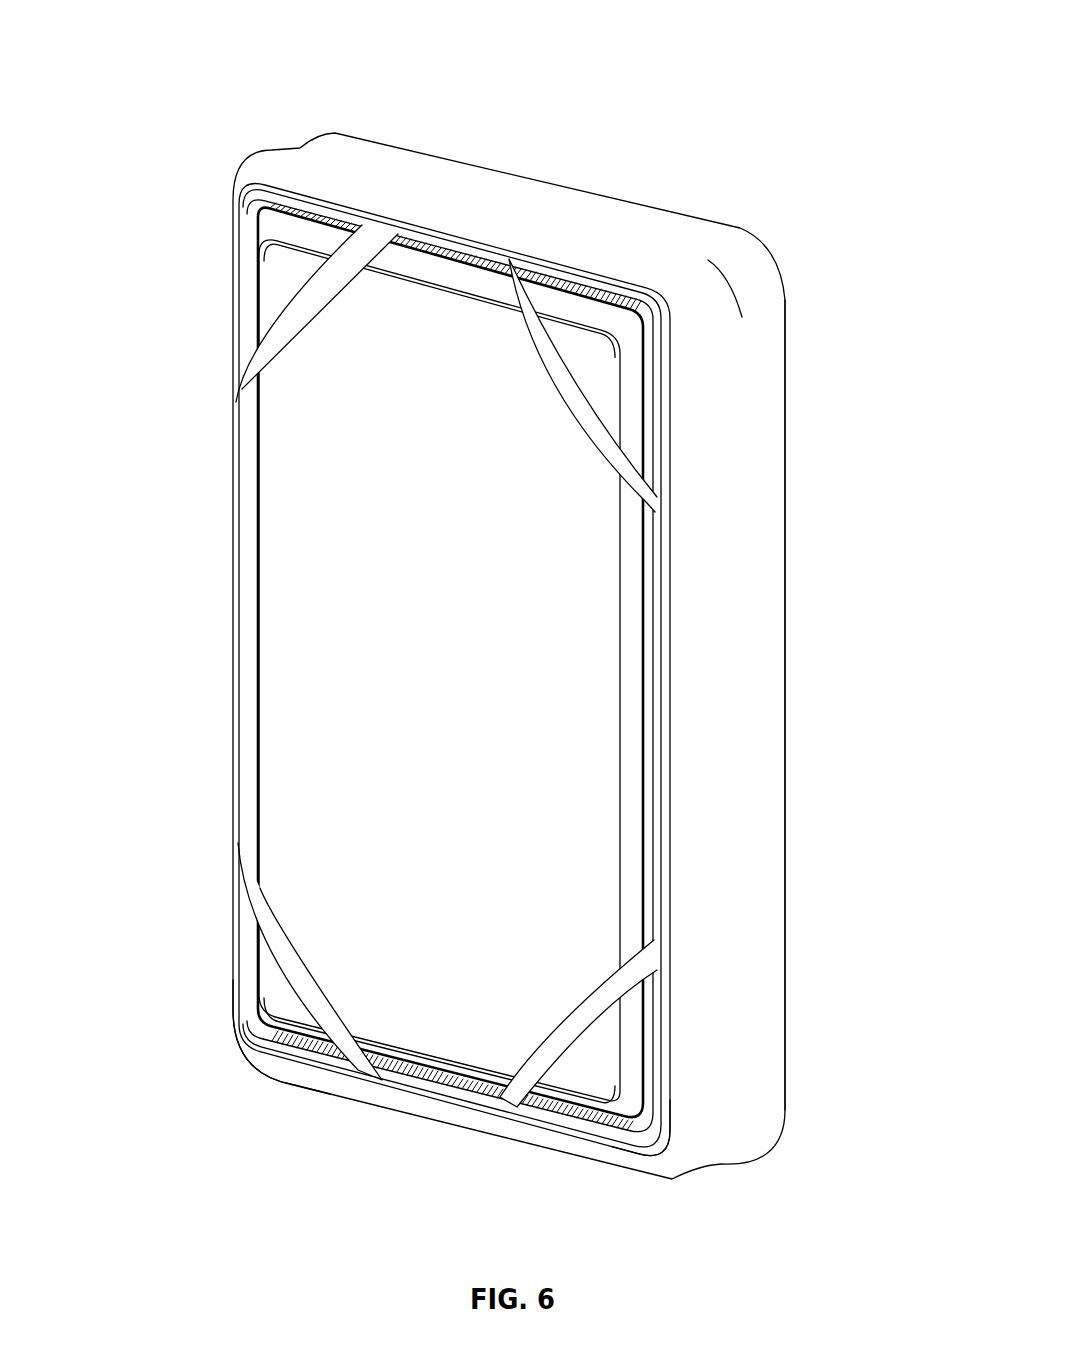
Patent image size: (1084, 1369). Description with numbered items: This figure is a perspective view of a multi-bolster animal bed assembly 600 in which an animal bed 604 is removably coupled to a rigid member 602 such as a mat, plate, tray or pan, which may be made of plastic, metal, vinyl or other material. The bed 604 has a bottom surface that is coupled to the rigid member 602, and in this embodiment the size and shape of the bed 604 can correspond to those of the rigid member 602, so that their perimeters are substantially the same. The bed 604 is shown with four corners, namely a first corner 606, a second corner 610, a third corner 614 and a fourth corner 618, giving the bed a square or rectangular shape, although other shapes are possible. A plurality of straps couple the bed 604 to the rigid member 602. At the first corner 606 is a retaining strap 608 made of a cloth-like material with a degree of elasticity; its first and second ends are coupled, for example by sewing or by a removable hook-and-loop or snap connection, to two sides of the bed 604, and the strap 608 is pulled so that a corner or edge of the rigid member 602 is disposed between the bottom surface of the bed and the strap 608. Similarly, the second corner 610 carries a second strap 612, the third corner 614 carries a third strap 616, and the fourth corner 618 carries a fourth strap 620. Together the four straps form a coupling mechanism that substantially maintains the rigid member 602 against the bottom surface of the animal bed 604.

The multi-bolster animal bed assembly 600 is at (506, 628).
The rigid member 602 is at (400, 533).
The animal bed 604 is at (768, 578).
The first corner 606 is at (272, 148).
The retaining strap 608 is at (333, 277).
The second corner 610 is at (676, 320).
The second strap 612 is at (527, 323).
The third corner 614 is at (225, 1060).
The third strap 616 is at (270, 930).
The fourth corner 618 is at (659, 1153).
The fourth strap 620 is at (643, 962).